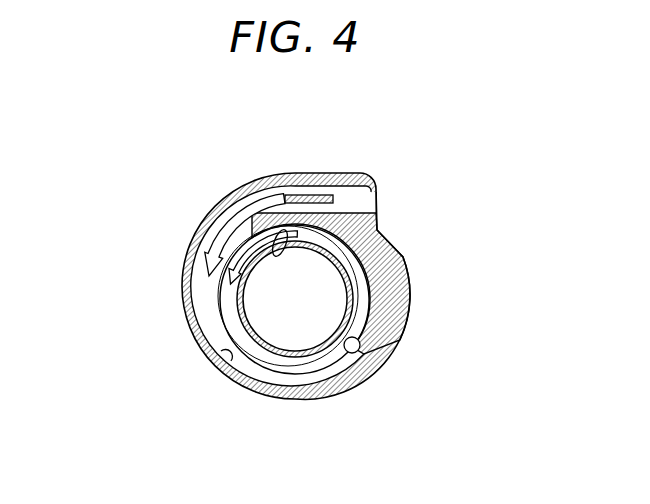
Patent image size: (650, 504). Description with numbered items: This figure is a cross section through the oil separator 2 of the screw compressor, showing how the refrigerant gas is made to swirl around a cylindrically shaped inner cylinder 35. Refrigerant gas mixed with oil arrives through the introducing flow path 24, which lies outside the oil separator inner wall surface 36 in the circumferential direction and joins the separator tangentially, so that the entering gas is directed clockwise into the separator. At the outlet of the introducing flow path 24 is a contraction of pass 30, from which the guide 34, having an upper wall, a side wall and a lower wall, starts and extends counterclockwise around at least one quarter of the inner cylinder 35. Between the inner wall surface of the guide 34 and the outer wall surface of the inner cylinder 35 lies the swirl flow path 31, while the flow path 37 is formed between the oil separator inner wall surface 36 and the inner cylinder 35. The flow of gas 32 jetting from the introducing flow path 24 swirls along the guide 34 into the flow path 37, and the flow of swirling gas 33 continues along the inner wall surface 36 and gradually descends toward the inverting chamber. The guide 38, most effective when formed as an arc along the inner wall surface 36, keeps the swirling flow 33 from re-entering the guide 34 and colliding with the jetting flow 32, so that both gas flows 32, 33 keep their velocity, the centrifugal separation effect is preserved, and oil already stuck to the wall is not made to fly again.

The oil separator 2 is at (253, 186).
The introducing flow path 24 is at (357, 203).
The contraction of pass 30 is at (236, 206).
The swirl flow path 31 is at (214, 337).
The flow of gas jetting out of the introducing flow path 32 is at (203, 257).
The flow of swirling gas 33 is at (227, 278).
The guide 34 is at (228, 364).
The inner cylinder 35 is at (288, 360).
The oil separator inner wall surface 36 is at (351, 354).
The flow path 37 is at (358, 278).
The guide 38 is at (285, 229).